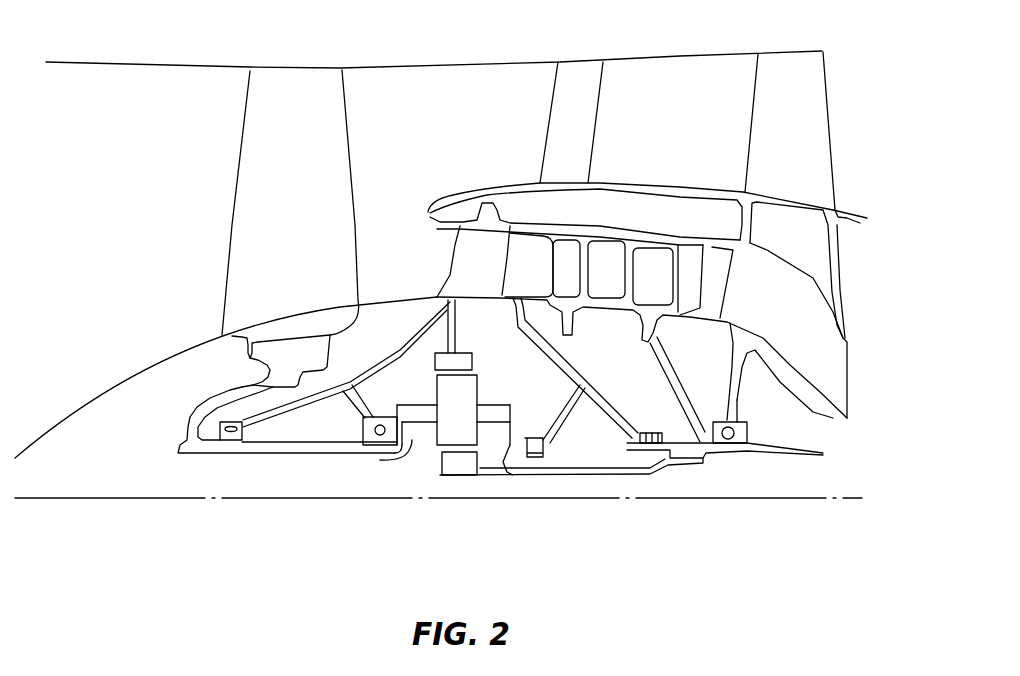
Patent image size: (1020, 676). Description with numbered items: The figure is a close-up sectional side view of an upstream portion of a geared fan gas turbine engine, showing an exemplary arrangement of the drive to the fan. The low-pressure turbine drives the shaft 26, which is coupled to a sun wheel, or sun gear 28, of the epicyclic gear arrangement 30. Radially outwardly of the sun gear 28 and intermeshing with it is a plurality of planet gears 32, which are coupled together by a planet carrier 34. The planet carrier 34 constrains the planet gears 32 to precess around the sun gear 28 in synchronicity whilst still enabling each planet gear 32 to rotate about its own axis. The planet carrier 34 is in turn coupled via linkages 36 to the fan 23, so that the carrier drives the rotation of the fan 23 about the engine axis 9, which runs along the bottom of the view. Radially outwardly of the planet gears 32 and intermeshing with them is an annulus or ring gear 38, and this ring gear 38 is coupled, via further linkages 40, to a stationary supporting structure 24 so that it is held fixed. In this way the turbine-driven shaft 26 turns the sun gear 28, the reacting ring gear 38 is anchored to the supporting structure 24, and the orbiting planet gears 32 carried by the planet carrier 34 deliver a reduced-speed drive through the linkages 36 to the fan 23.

The engine axis 9 is at (190, 499).
The fan 23 is at (260, 238).
The stationary supporting structure 24 is at (468, 258).
The shaft 26 is at (710, 452).
The sun gear 28 is at (457, 468).
The epicyclic gear arrangement 30 is at (407, 458).
The planet gears 32 is at (433, 440).
The planet carrier 34 is at (503, 440).
The linkages 36 is at (362, 453).
The ring gear 38 is at (433, 362).
The linkages 40 is at (458, 323).